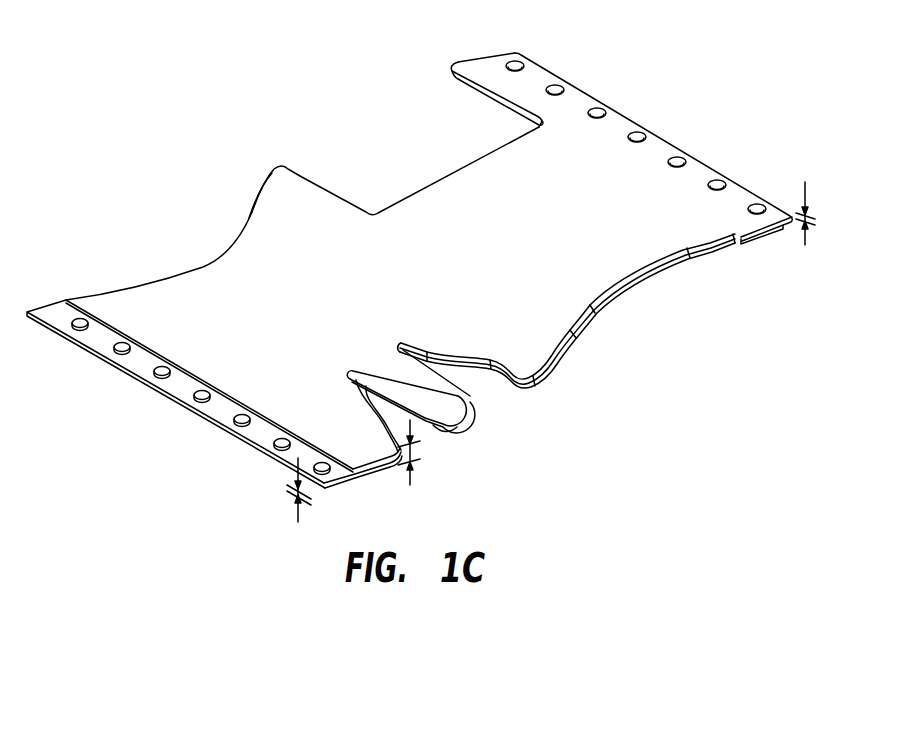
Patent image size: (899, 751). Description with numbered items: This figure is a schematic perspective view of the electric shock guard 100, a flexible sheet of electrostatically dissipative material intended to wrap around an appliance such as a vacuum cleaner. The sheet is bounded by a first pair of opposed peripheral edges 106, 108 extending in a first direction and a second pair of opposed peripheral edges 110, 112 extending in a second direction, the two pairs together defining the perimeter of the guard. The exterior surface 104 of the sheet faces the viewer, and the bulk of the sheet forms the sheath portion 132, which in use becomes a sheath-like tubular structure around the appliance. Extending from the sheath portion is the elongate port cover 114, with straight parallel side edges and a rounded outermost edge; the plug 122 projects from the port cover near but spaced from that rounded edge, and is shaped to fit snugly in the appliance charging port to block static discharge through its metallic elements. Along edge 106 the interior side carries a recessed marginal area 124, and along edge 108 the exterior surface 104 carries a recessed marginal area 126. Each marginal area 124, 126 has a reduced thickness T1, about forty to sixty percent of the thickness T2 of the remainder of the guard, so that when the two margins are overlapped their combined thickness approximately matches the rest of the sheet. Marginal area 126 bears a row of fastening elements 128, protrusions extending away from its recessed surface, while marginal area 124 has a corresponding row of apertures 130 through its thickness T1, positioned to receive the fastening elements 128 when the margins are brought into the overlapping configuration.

The electric shock guard 100 is at (255, 78).
The exterior surface 104 is at (452, 283).
The first edge 106 is at (592, 102).
The second edge 108 is at (157, 392).
The third edge 110 is at (263, 187).
The fourth edge 112 is at (622, 293).
The port cover 114 is at (449, 404).
The plug 122 is at (445, 433).
The recessed marginal area 124 is at (780, 230).
The recessed marginal area 126 is at (258, 437).
The fastening elements 128 is at (80, 318).
The apertures 130 is at (675, 154).
The sheath portion 132 is at (190, 303).
The reduced thickness of marginal areas T1 is at (553, 352).
The thickness of remainder of electric shock guard T2 is at (417, 452).